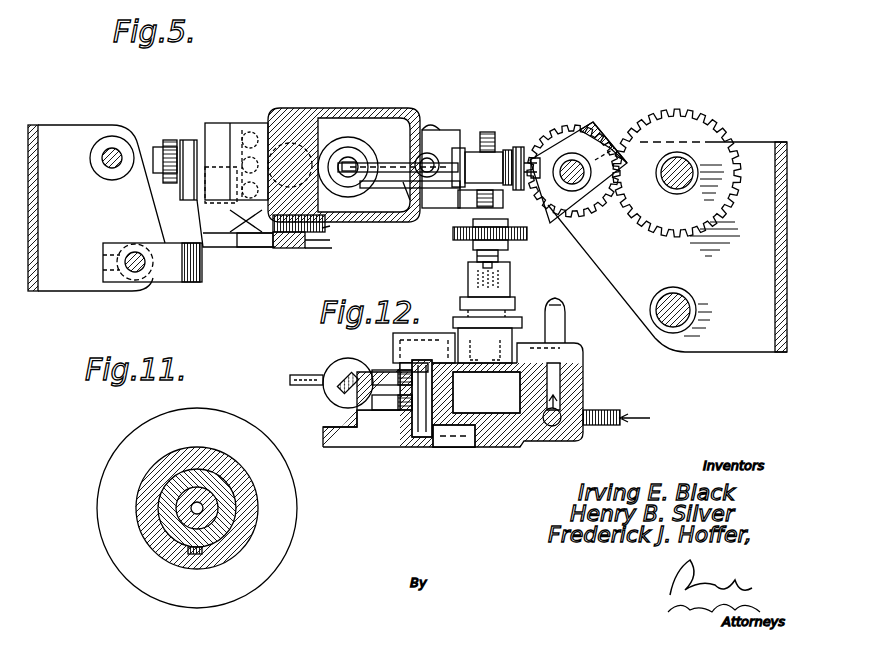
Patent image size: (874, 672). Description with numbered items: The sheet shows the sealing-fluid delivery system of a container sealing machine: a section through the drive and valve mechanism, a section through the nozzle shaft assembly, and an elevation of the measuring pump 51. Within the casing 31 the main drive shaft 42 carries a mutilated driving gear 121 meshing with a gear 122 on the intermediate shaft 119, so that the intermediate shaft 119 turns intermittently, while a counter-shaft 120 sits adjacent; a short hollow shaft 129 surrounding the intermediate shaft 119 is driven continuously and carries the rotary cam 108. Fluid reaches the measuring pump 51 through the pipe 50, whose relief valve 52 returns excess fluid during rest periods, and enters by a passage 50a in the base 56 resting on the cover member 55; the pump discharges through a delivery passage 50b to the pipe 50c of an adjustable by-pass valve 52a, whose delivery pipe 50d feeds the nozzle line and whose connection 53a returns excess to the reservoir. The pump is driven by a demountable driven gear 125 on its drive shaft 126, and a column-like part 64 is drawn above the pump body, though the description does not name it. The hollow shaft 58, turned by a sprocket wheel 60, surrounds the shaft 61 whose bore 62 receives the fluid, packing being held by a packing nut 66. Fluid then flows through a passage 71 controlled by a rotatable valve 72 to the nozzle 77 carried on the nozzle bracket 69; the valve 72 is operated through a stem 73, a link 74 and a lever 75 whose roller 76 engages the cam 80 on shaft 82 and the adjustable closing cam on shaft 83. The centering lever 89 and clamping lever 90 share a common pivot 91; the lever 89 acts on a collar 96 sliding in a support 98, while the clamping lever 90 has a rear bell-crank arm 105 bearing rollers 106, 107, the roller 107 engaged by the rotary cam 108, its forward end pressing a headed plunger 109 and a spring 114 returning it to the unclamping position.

In FIG. 5, the casing 31 is at (781, 142).
In FIG. 5, the main drive shaft 42 is at (682, 168).
In FIG. 12, the pipe 50 is at (600, 410).
In FIG. 12, the passage 50a is at (580, 378).
In FIG. 12, the delivery passage 50b is at (412, 342).
In FIG. 12, the pipe 50c is at (402, 370).
In FIG. 12, the pipe 50d is at (406, 430).
In FIG. 12, the measuring pump 51 is at (513, 283).
In FIG. 12, the relief valve 52 is at (566, 322).
In FIG. 12, the adjustable by-pass valve 52a is at (346, 360).
In FIG. 12, the connection 53a is at (300, 378).
In FIG. 12, the cover member 55 is at (340, 426).
In FIG. 12, the base 56 is at (585, 360).
In FIG. 11, the hollow shaft 58 is at (220, 478).
In FIG. 11, the sprocket wheel 60 is at (240, 536).
In FIG. 12, the shaft 61 is at (446, 448).
In FIG. 11, the shaft 61 is at (206, 511).
In FIG. 12, the bore 62 is at (420, 440).
In FIG. 11, the bore 62 is at (157, 478).
In FIG. 12, the column 64 is at (467, 285).
In FIG. 11, the packing nut 66 is at (250, 490).
In FIG. 5, the nozzle bracket 69 is at (222, 130).
In FIG. 5, the passage 71 is at (318, 113).
In FIG. 5, the rotatable valve 72 is at (253, 231).
In FIG. 5, the stem 73 is at (280, 250).
In FIG. 5, the link 74 is at (325, 230).
In FIG. 5, the lever 75 is at (268, 248).
In FIG. 5, the roller 76 is at (168, 147).
In FIG. 5, the nozzle 77 is at (246, 147).
In FIG. 5, the cam 80 is at (186, 283).
In FIG. 5, the shaft 82 is at (124, 252).
In FIG. 5, the shaft 83 is at (102, 156).
In FIG. 5, the lever 89 is at (404, 183).
In FIG. 5, the clamping lever 90 is at (372, 167).
In FIG. 5, the common pivot 91 is at (470, 133).
In FIG. 5, the collar 96 is at (349, 140).
In FIG. 5, the support 98 is at (367, 193).
In FIG. 5, the rear bell-crank arm 105 is at (485, 150).
In FIG. 5, the roller 106 is at (440, 153).
In FIG. 5, the roller 107 is at (528, 160).
In FIG. 5, the rotary cam 108 is at (548, 210).
In FIG. 5, the headed plunger 109 is at (357, 160).
In FIG. 5, the spring 114 is at (431, 180).
In FIG. 5, the intermediate shaft 119 is at (566, 152).
In FIG. 5, the counter-shaft 120 is at (694, 302).
In FIG. 5, the driving gear 121 is at (657, 231).
In FIG. 5, the gear 122 is at (592, 208).
In FIG. 5, the driven gear 125 is at (518, 240).
In FIG. 5, the drive shaft 126 is at (502, 255).
In FIG. 5, the short hollow shaft 129 is at (608, 178).